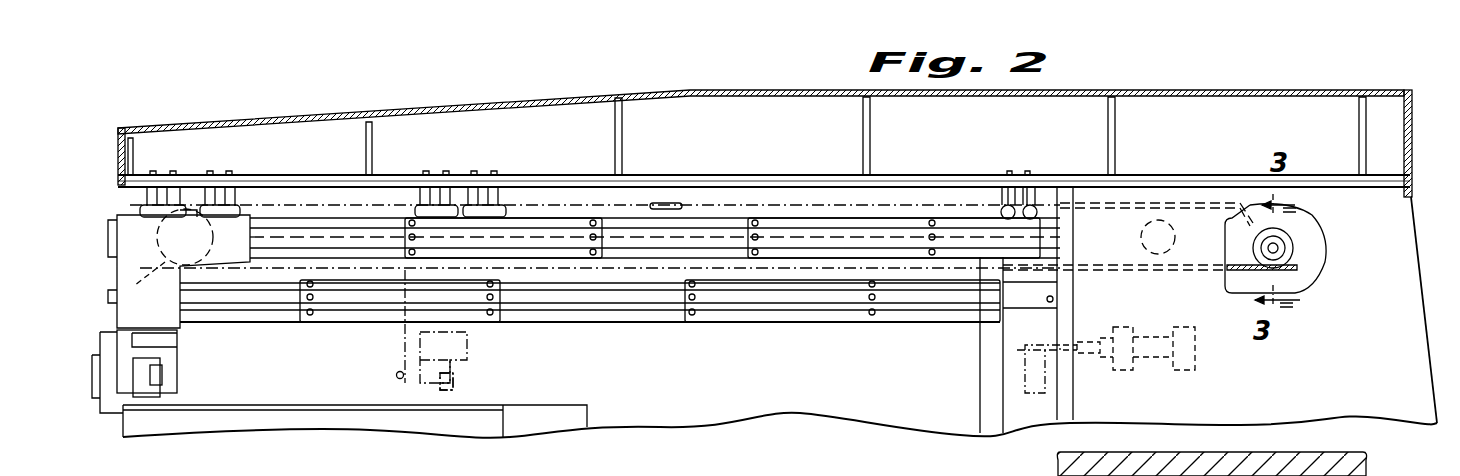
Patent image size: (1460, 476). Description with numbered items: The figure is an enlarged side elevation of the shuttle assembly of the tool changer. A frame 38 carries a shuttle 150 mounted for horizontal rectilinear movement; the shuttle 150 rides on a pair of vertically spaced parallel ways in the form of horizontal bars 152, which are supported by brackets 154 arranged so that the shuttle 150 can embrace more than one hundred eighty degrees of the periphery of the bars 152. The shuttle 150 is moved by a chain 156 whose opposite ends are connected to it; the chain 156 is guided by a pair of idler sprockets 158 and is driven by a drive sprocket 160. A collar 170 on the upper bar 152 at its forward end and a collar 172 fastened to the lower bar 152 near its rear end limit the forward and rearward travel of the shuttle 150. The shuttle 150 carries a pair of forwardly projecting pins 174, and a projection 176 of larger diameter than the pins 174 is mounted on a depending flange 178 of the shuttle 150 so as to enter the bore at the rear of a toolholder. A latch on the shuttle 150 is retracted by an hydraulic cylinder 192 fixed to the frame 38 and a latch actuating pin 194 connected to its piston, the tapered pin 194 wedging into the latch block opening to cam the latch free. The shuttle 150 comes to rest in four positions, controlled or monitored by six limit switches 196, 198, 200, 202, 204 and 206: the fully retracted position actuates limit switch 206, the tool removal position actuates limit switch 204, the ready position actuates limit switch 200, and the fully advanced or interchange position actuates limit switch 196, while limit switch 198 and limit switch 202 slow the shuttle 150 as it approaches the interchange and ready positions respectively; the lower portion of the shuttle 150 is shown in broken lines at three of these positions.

The frame 38 is at (782, 177).
The shuttle 150 is at (168, 320).
The bars 152 is at (797, 240).
The brackets 154 is at (480, 313).
The chain 156 is at (668, 204).
The idler sprockets 158 is at (131, 281).
The drive sprocket 160 is at (1295, 252).
The collar 170 is at (106, 245).
The collar 172 is at (1055, 305).
The pins 174 is at (398, 380).
The projection 176 is at (445, 392).
The depending flange 178 is at (460, 375).
The hydraulic cylinder 192 is at (1165, 352).
The latch actuating pin 194 is at (1023, 352).
The limit switch 196 is at (146, 205).
The limit switch 198 is at (233, 208).
The limit switch 200 is at (417, 210).
The limit switch 202 is at (498, 212).
The limit switch 204 is at (1003, 210).
The limit switch 206 is at (1037, 207).